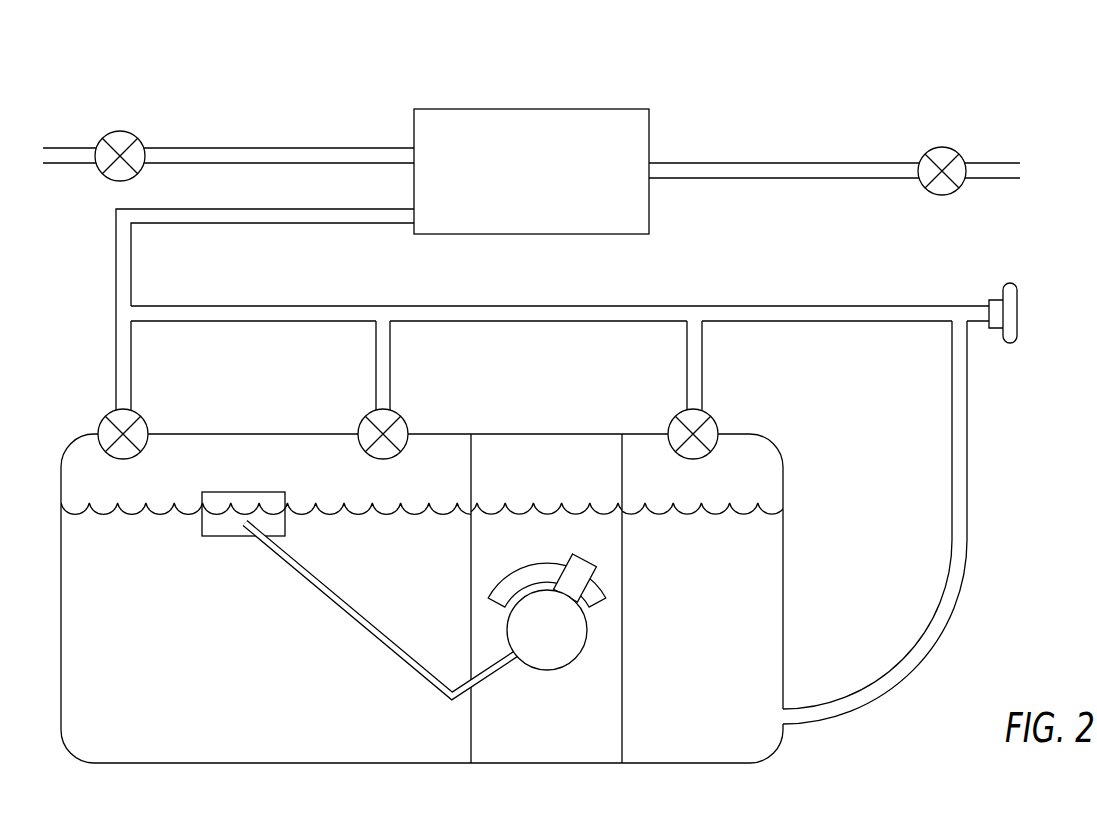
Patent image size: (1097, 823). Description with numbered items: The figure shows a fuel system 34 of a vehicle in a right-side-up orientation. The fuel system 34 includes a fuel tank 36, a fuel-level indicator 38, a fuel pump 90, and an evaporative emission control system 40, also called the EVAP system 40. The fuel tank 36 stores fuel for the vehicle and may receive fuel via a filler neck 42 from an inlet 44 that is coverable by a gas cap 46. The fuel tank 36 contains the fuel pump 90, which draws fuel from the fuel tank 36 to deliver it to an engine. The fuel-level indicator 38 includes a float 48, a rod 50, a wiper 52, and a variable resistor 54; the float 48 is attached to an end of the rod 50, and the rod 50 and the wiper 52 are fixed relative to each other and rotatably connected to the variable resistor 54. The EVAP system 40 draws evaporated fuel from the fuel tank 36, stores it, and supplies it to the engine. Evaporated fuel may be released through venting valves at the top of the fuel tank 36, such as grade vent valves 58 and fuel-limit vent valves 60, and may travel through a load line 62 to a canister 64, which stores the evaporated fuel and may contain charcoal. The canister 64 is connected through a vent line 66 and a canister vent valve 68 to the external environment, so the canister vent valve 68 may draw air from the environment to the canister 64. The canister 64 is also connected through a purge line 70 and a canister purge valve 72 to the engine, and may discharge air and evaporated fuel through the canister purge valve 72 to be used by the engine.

The fuel system 34 is at (62, 74).
The fuel tank 36 is at (330, 764).
The fuel-level indicator 38 is at (290, 646).
The evaporative emission control system 40 is at (569, 152).
The filler neck 42 is at (953, 590).
The inlet 44 is at (978, 306).
The gas cap 46 is at (1019, 304).
The float 48 is at (265, 492).
The rod 50 is at (300, 578).
The wiper 52 is at (583, 559).
The variable resistor 54 is at (537, 561).
The grade vent valves 58 is at (141, 417).
The fuel-limit vent valves 60 is at (401, 417).
The load line 62 is at (296, 225).
The canister 64 is at (628, 109).
The vent line 66 is at (786, 162).
The canister vent valve 68 is at (945, 148).
The purge line 70 is at (253, 147).
The canister purge valve 72 is at (122, 131).
The fuel pump 90 is at (623, 665).